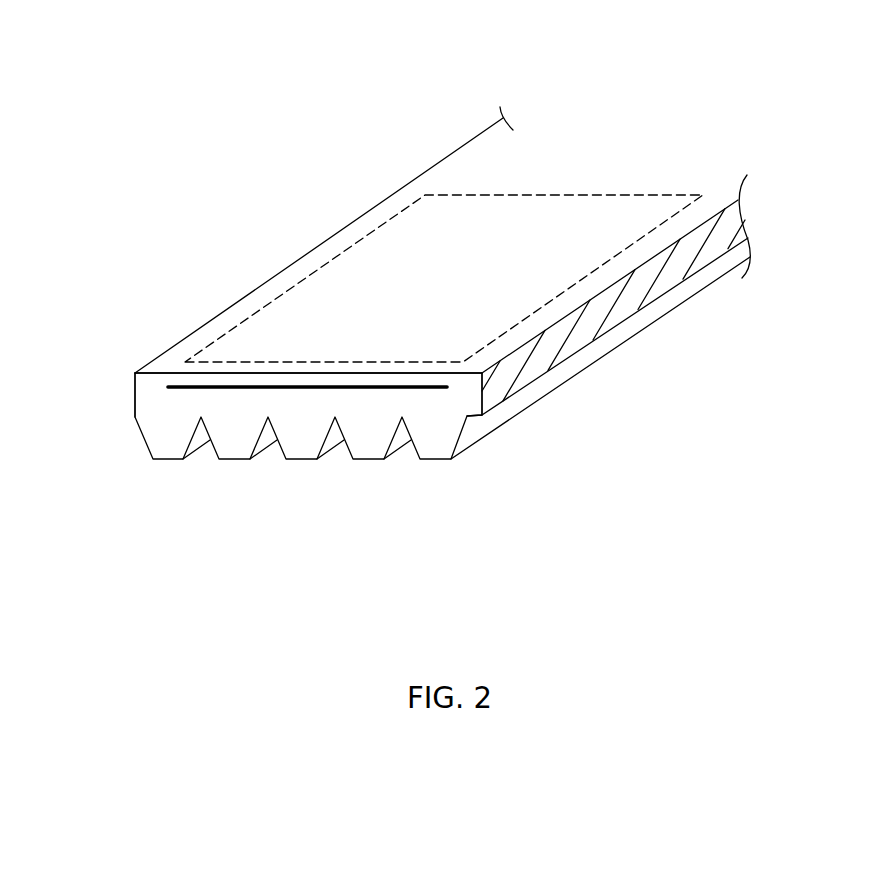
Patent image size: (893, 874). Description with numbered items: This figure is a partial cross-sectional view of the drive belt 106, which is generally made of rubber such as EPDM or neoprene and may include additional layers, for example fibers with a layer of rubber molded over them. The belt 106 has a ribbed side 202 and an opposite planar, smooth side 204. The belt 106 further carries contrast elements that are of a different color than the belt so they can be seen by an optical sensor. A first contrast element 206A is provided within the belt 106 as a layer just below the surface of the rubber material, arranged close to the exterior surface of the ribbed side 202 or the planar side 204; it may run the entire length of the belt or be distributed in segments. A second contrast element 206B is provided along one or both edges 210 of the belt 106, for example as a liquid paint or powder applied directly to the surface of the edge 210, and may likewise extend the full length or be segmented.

The drive belt 106 is at (397, 293).
The ribbed side 202 is at (166, 466).
The planar side 204 is at (630, 173).
The contrast element 206A is at (267, 302).
The contrast element 206B is at (623, 312).
The edge 210 is at (130, 398).